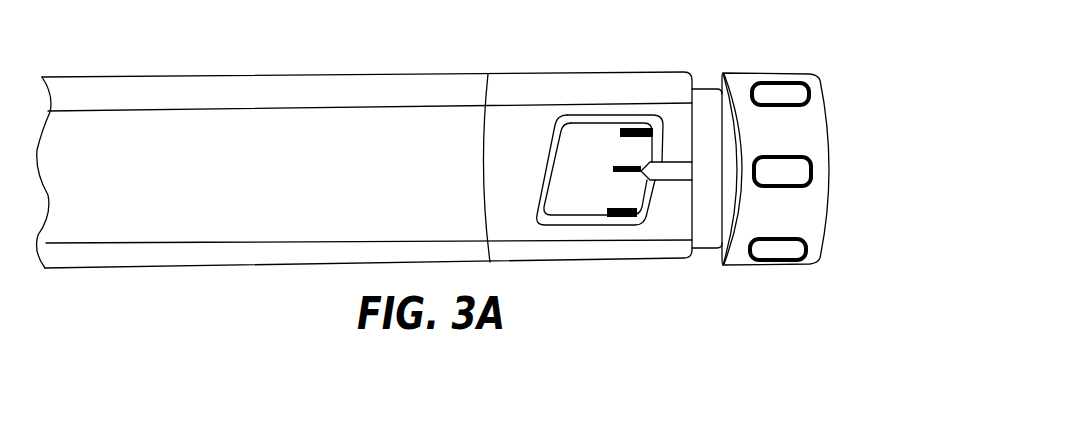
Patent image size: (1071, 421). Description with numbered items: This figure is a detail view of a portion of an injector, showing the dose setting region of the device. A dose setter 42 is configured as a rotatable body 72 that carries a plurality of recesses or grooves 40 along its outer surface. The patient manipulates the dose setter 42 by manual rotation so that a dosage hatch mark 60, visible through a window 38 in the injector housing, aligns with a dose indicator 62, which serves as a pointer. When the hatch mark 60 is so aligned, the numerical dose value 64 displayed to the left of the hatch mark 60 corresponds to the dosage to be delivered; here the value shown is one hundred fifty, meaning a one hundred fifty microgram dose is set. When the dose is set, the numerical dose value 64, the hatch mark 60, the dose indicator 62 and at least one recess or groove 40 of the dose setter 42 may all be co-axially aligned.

The window 38 is at (609, 162).
The recess or groove 40 is at (818, 195).
The dose setter 42 is at (791, 149).
The hatch mark 60 is at (627, 158).
The dose indicator 62 is at (674, 171).
The numerical dose value 64 is at (603, 200).
The rotatable body 72 is at (830, 169).